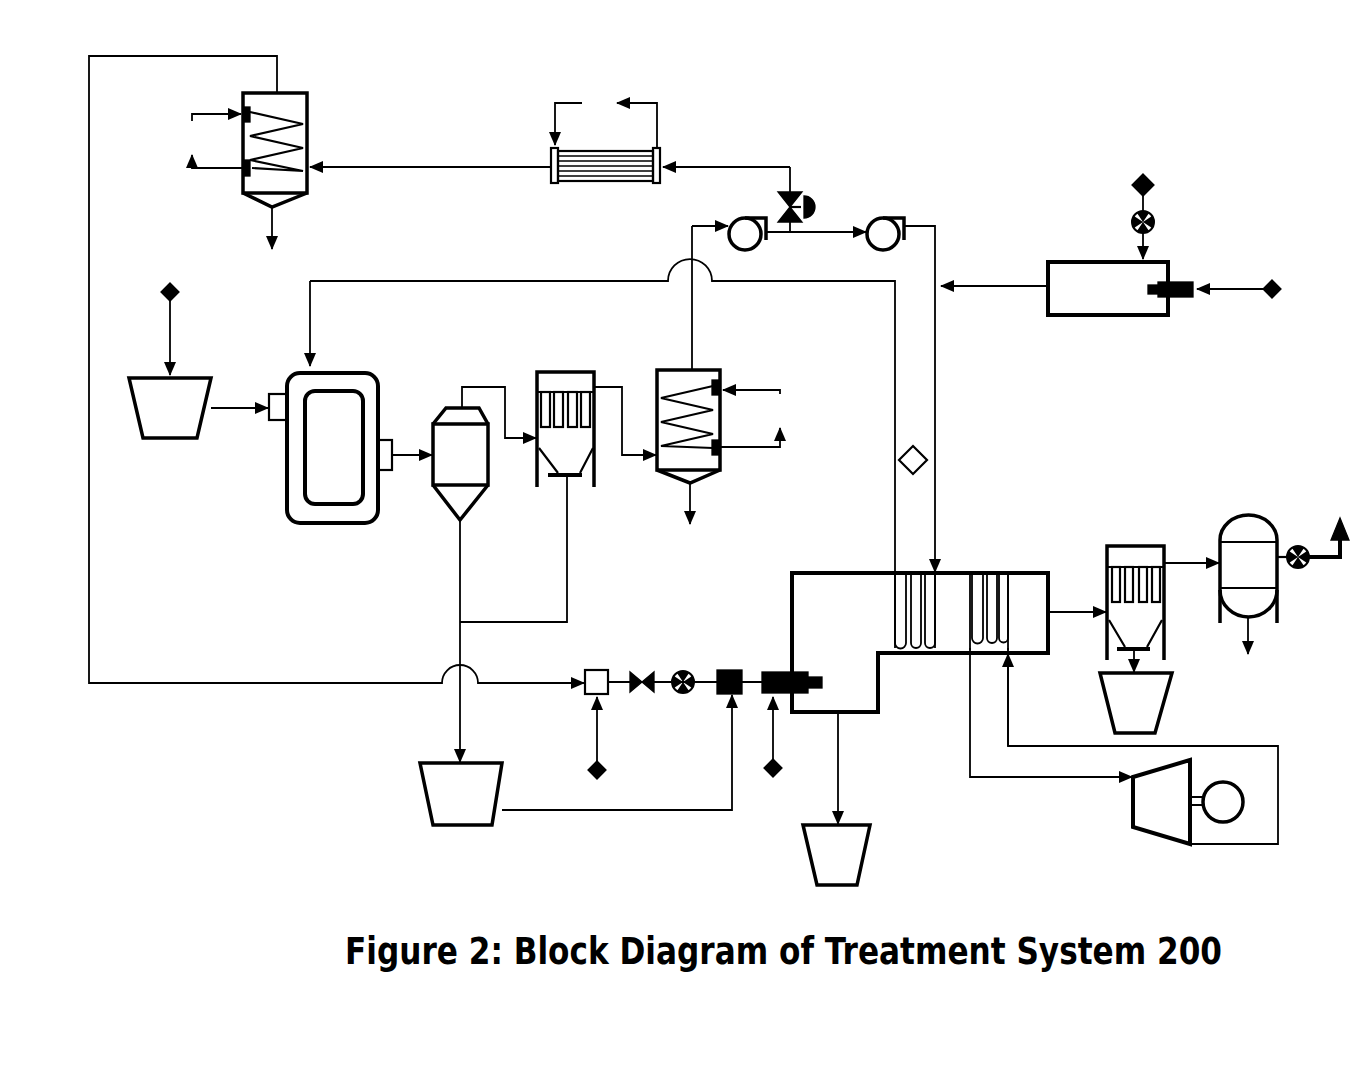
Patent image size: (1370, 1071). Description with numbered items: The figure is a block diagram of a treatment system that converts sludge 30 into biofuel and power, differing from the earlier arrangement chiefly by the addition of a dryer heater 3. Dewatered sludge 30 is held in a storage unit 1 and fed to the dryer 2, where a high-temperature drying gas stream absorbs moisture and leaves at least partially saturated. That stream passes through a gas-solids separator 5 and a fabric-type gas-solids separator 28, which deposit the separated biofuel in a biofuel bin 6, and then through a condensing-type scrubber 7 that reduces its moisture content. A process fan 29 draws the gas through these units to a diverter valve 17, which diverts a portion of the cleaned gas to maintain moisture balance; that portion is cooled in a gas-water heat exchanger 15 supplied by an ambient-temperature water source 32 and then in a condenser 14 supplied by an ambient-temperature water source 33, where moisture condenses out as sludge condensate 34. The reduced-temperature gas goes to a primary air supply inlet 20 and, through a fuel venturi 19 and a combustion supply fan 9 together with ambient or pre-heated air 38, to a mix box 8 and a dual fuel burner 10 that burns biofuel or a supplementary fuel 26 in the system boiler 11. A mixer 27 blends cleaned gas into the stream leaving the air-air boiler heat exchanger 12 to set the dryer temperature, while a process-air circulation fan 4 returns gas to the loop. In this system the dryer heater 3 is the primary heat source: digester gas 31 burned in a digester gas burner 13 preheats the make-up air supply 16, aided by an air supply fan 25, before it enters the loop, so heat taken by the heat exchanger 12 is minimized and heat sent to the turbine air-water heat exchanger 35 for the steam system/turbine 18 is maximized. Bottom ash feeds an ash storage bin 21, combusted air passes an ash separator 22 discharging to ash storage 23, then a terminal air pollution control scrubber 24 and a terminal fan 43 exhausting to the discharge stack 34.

The storage unit 1 is at (170, 443).
The dryer 2 is at (283, 502).
The dryer heater 3 is at (1095, 319).
The process-air circulation fan 4 is at (891, 216).
The gas-solids separator 5 is at (445, 405).
The biofuel bin 6 is at (432, 760).
The condensing-type scrubber 7 is at (672, 367).
The mix box 8 is at (728, 667).
The combustion supply fan 9 is at (681, 669).
The dual fuel burner 10 is at (778, 669).
The system boiler 11 is at (797, 569).
The air-air boiler heat exchanger 12 is at (893, 598).
The digester gas burner 13 is at (1181, 302).
The condenser 14 is at (313, 110).
The gas-water heat exchanger 15 is at (600, 188).
The make-up air supply 16 is at (1143, 176).
The diverter valve 17 is at (810, 196).
The steam system/turbine 18 is at (1130, 808).
The fuel venturi 19 is at (640, 670).
The primary air supply inlet 20 is at (583, 694).
The ash storage bin 21 is at (806, 866).
The ash separator 22 is at (1140, 543).
The ash storage 23 is at (1108, 720).
The terminal air pollution control scrubber 24 is at (1235, 514).
The air supply fan 25 is at (1158, 222).
The supplementary fuel 26 is at (773, 754).
The mixer 27 is at (926, 451).
The fabric-type gas-solids separator 28 is at (549, 369).
The process fan 29 is at (733, 217).
The sludge 30 is at (170, 313).
The digester gas 31 is at (1256, 289).
The ambient-temperature water source 32 is at (606, 117).
The ambient-temperature water source 33 is at (486, 280).
The sludge condensate 34 is at (1340, 594).
The turbine air-water heat exchanger 35 is at (1013, 590).
The ambient-temperature and/or pre-heated air 38 is at (616, 741).
The terminal fan 43 is at (1298, 545).